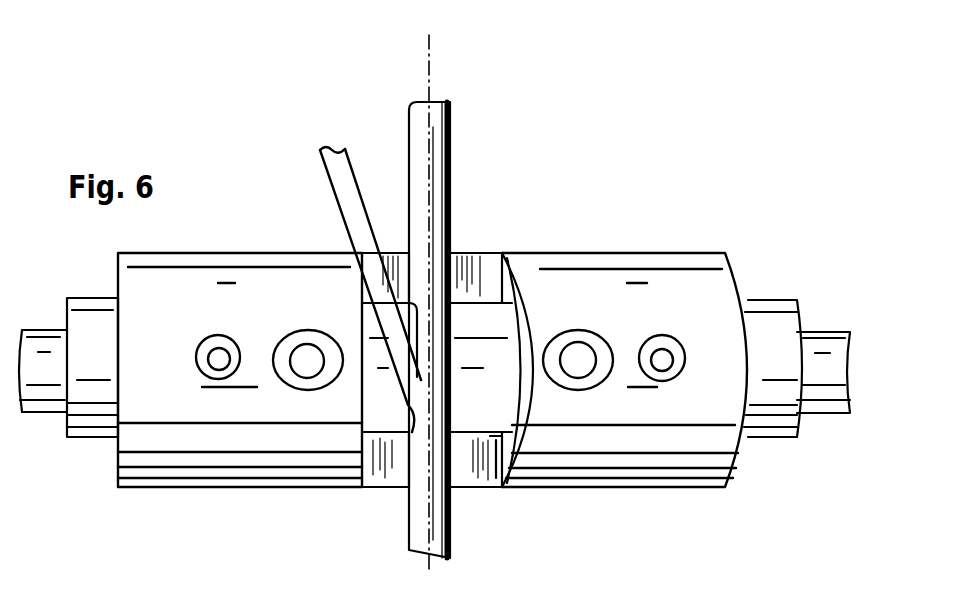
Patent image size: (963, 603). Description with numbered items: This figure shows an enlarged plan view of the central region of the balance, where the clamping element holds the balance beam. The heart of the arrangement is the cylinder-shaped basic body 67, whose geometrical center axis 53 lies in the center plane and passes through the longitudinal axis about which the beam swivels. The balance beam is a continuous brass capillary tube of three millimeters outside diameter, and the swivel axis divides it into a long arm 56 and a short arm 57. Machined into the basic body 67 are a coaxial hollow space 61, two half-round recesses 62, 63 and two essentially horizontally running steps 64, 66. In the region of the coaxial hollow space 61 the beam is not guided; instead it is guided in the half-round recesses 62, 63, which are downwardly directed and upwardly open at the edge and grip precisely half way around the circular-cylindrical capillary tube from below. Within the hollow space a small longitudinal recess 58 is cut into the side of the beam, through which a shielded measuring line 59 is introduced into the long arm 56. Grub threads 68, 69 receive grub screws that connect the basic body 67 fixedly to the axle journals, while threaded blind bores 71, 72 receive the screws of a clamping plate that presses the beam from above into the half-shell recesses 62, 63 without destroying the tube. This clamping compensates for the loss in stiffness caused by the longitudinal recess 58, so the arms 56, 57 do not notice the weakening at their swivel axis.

The geometrical center axis 53 is at (430, 88).
The long arm 56 is at (420, 517).
The short arm 57 is at (433, 204).
The longitudinal recess 58 is at (377, 483).
The shielded measuring line 59 is at (333, 183).
The coaxial hollow space 61 is at (488, 470).
The half-round recess 62 is at (463, 256).
The half-round recess 63 is at (457, 468).
The step 64 is at (495, 257).
The step 66 is at (497, 483).
The basic body 67 is at (642, 268).
The grub thread 68 is at (226, 364).
The grub thread 69 is at (675, 362).
The threaded blind bore 71 is at (314, 366).
The threaded blind bore 72 is at (582, 368).